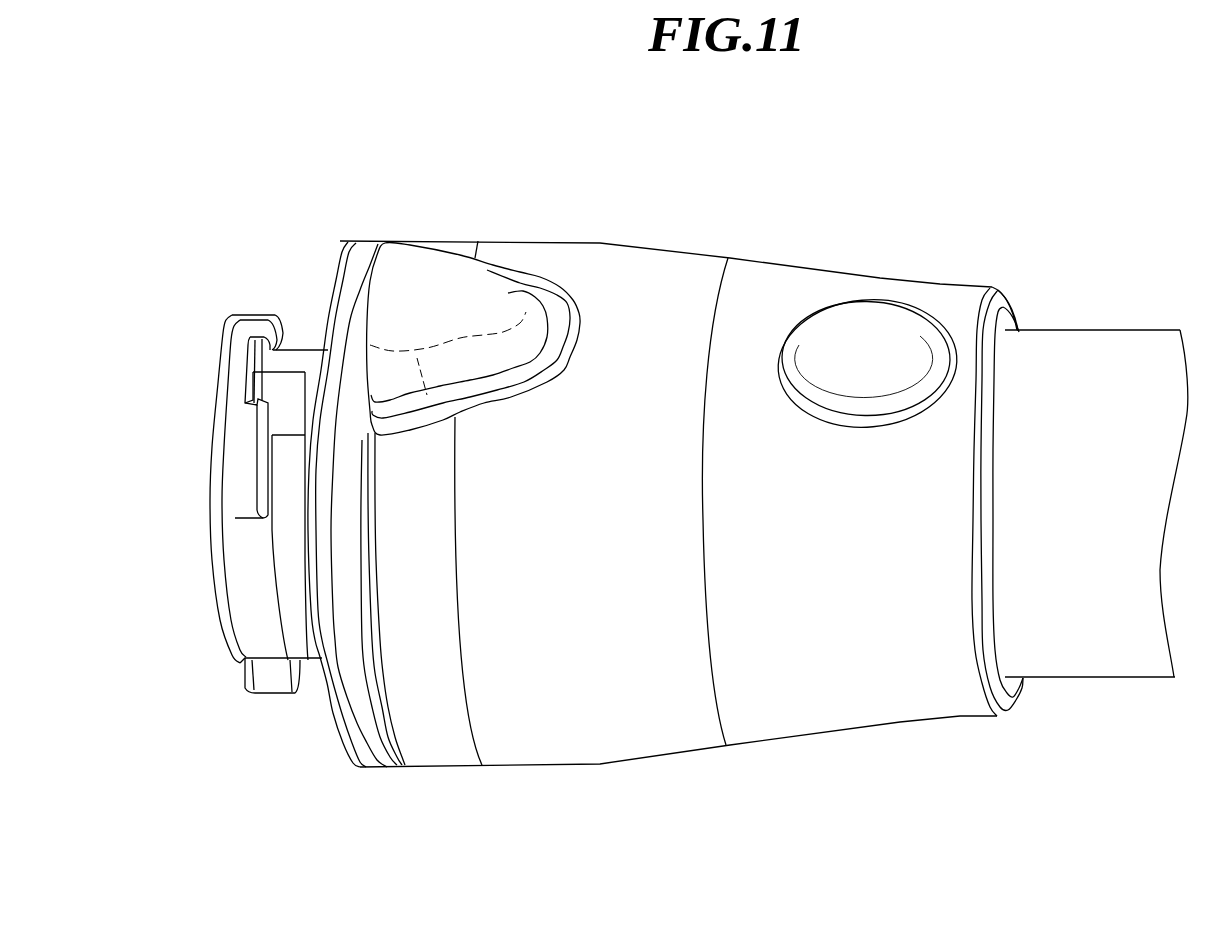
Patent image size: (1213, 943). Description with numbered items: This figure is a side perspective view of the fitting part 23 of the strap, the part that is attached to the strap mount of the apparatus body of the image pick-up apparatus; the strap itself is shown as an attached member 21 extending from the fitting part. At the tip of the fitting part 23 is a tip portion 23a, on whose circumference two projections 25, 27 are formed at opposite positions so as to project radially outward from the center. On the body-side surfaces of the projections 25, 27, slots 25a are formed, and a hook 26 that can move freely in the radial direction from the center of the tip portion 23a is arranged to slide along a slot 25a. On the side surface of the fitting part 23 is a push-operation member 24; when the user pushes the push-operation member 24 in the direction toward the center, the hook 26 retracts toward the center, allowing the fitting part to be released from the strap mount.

The shaft 21 is at (1083, 677).
The fitting part 23 is at (657, 755).
The tip portion 23a is at (318, 660).
The push-operation member 24 is at (488, 293).
The projection 25 is at (247, 328).
The slot 25a is at (250, 383).
The hook 26 is at (293, 390).
The projection 27 is at (270, 690).